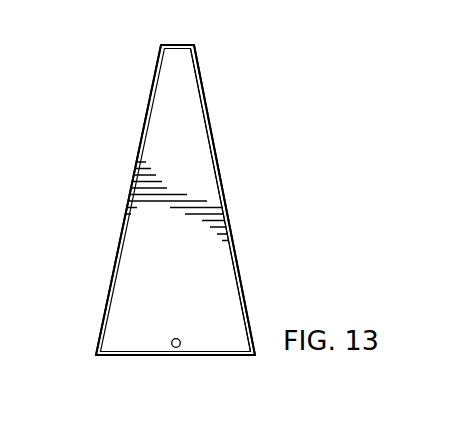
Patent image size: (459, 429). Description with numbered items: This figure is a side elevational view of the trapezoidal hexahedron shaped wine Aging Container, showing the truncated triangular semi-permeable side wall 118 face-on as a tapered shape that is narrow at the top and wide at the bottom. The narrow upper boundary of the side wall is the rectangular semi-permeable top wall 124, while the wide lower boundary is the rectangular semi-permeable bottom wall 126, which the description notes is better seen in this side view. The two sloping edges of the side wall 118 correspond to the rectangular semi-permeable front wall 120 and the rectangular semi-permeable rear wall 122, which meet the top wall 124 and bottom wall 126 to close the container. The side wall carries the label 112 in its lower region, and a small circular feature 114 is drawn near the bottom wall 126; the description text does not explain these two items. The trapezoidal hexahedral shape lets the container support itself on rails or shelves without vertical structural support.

The body panel 112 is at (205, 276).
The aperture 114 is at (176, 348).
The truncated triangular semi-permeable side wall 118 is at (203, 157).
The rectangular semi-permeable front wall 120 is at (225, 186).
The rectangular semi-permeable rear wall 122 is at (132, 165).
The rectangular semi-permeable top wall 124 is at (176, 45).
The rectangular semi-permeable bottom wall 126 is at (137, 357).